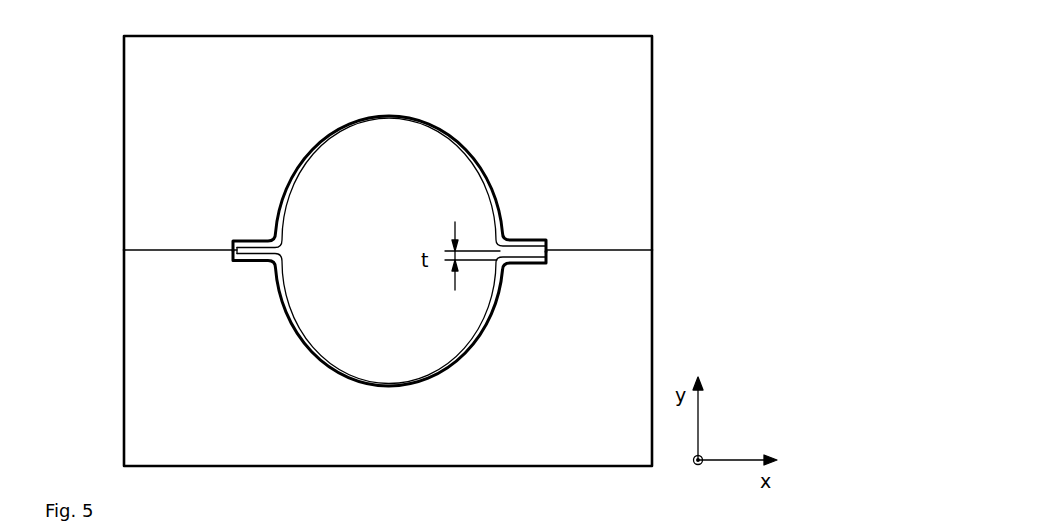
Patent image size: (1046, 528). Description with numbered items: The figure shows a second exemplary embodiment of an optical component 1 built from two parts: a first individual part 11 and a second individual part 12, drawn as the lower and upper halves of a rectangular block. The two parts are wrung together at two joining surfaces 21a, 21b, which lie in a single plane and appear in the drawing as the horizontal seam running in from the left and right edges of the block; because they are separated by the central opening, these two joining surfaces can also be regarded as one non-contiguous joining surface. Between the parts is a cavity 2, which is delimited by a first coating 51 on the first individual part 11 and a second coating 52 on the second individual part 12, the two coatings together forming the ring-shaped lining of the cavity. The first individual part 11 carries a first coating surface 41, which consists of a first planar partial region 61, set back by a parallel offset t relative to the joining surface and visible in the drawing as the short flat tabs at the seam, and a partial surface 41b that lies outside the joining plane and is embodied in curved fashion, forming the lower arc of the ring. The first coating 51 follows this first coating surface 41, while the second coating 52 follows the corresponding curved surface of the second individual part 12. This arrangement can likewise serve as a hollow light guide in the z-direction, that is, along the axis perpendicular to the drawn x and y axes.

The optical component 1 is at (434, 245).
The first individual part 11 is at (640, 325).
The second individual part 12 is at (647, 130).
The joining surface 21a is at (142, 256).
The joining surface 21b is at (644, 260).
The cavity 2 is at (378, 251).
The second coating 52 is at (296, 175).
The first coating 51 is at (300, 323).
The first coating surface 41 is at (272, 250).
The first planar partial region 61 is at (391, 182).
The partial surface 41b is at (353, 356).